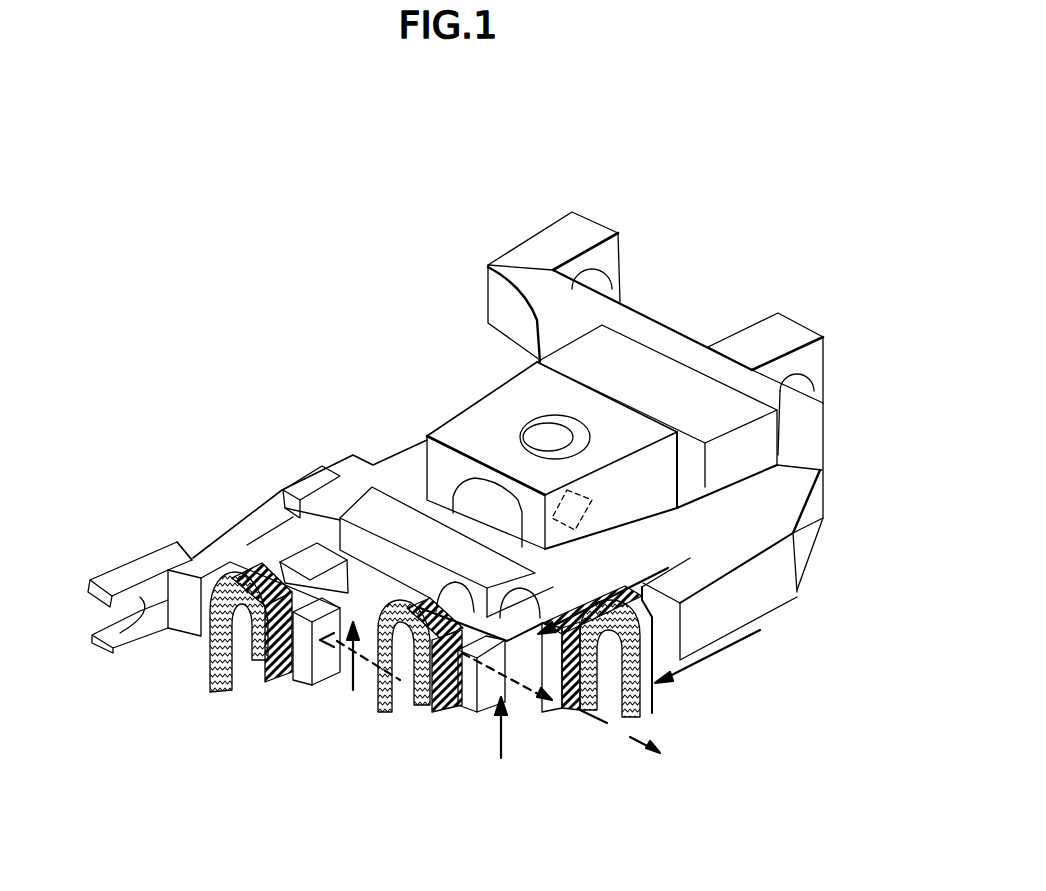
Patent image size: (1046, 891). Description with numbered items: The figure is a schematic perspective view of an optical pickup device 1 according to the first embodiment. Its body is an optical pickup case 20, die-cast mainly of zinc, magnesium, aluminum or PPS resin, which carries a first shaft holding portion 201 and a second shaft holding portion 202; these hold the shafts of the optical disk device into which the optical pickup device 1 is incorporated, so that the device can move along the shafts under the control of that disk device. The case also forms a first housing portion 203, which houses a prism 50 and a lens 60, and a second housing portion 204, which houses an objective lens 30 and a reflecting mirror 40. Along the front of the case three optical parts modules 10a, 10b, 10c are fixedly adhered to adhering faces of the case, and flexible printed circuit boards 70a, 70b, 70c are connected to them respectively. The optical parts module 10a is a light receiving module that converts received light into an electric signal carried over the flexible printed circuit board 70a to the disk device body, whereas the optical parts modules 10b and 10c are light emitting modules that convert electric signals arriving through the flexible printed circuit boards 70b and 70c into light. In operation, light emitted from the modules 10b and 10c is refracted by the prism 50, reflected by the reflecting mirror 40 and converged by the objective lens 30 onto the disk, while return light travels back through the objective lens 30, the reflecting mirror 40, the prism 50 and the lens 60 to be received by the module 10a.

The optical pickup device 1 is at (354, 244).
The optical pickup case 20 is at (340, 456).
The objective lens 30 is at (528, 430).
The reflecting mirror 40 is at (592, 503).
The prism 50 is at (352, 507).
The lens 60 is at (240, 533).
The optical parts module 10a is at (270, 682).
The optical parts module 10b is at (467, 712).
The optical parts module 10c is at (563, 712).
The flexible printed circuit board 70a is at (210, 690).
The flexible printed circuit board 70b is at (393, 725).
The flexible printed circuit board 70c is at (645, 720).
The first shaft holding portion 201 is at (93, 575).
The second shaft holding portion 202 is at (614, 268).
The first housing portion 203 is at (283, 506).
The second housing portion 204 is at (663, 345).